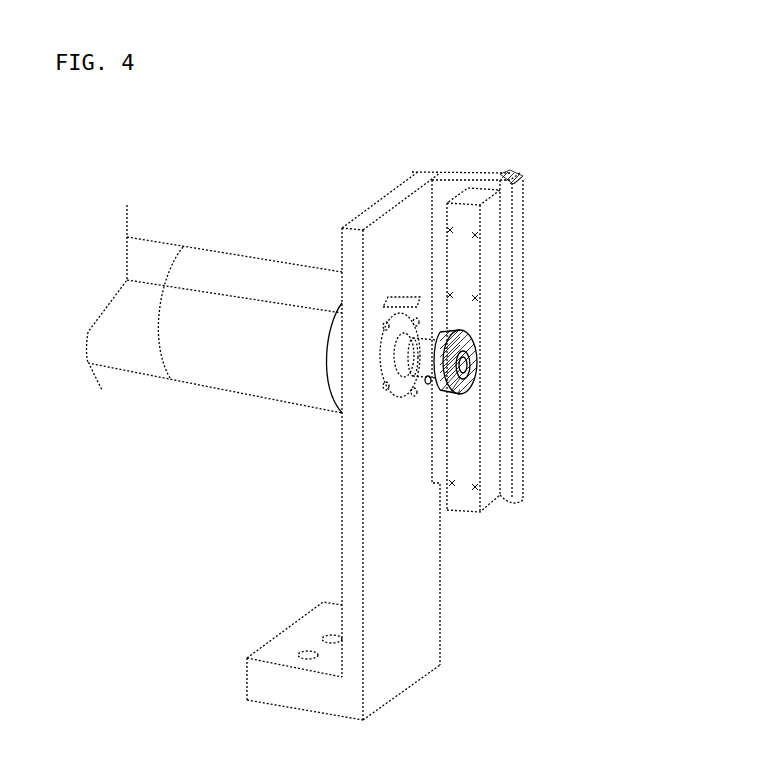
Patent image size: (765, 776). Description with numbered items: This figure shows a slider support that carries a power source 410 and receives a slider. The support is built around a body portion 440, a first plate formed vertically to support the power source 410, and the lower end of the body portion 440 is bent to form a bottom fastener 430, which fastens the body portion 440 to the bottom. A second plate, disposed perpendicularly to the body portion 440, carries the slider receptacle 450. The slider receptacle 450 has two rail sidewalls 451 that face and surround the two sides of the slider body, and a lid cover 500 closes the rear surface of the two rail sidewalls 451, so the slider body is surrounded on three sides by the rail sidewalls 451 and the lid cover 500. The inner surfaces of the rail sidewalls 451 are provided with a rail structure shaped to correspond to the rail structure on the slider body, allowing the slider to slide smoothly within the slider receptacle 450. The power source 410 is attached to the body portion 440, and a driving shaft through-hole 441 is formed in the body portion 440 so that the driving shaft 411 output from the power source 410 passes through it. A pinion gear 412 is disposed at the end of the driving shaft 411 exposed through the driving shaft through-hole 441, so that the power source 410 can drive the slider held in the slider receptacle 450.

The power source 410 is at (193, 253).
The driving shaft 411 is at (413, 347).
The pinion gear 412 is at (450, 350).
The bottom fastener 430 is at (275, 681).
The body portion 440 is at (405, 568).
The driving shaft through-hole 441 is at (427, 378).
The slider receptacle 450 is at (525, 370).
The rail sidewalls 451 is at (493, 288).
The lid cover 500 is at (470, 498).